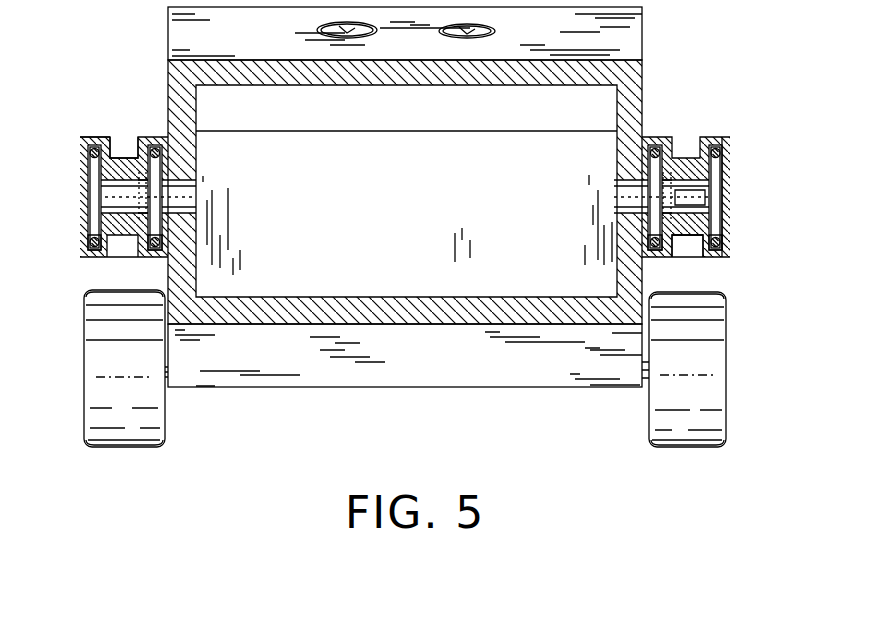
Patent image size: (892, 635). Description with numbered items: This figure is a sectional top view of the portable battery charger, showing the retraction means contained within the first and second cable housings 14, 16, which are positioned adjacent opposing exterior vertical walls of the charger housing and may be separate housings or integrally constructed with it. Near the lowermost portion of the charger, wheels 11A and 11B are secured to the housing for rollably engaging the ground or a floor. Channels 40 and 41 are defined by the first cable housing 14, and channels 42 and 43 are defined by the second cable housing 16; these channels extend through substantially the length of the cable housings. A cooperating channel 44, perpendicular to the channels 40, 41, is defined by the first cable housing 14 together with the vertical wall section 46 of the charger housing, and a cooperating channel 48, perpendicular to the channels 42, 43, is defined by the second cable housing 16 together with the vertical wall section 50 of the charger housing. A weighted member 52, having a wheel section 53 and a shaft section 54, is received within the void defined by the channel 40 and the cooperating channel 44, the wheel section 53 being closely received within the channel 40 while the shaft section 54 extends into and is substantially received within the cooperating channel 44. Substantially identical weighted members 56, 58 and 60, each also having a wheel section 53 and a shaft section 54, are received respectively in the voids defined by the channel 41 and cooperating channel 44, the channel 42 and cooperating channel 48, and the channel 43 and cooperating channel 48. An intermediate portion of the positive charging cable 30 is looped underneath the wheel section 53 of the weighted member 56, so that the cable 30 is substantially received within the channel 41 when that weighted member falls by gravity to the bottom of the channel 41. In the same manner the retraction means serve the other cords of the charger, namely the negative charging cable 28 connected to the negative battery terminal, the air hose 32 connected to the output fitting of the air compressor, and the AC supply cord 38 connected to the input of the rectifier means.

The second cable housing 16 is at (78, 195).
The first cable housing 14 is at (735, 191).
The weighted member 60 is at (93, 176).
The channel 43 is at (84, 136).
The vertical wall section 50 is at (124, 187).
The weighted member 58 is at (128, 157).
The channel 42 is at (153, 152).
The cooperating channel 48 is at (143, 212).
The air hose 32 is at (96, 242).
The negative charging cable 28 is at (156, 252).
The channel 41 is at (658, 155).
The channel 40 is at (723, 173).
The weighted member 52 is at (725, 168).
The weighted member 56 is at (673, 193).
The vertical wall section 46 is at (675, 188).
The wheel section 53 is at (716, 206).
The shaft section 54 is at (697, 207).
The AC supply cord 38 is at (723, 247).
The positive charging cable 30 is at (660, 230).
The cooperating channel 44 is at (678, 233).
The wheel 11A is at (716, 365).
The wheel 11B is at (98, 380).